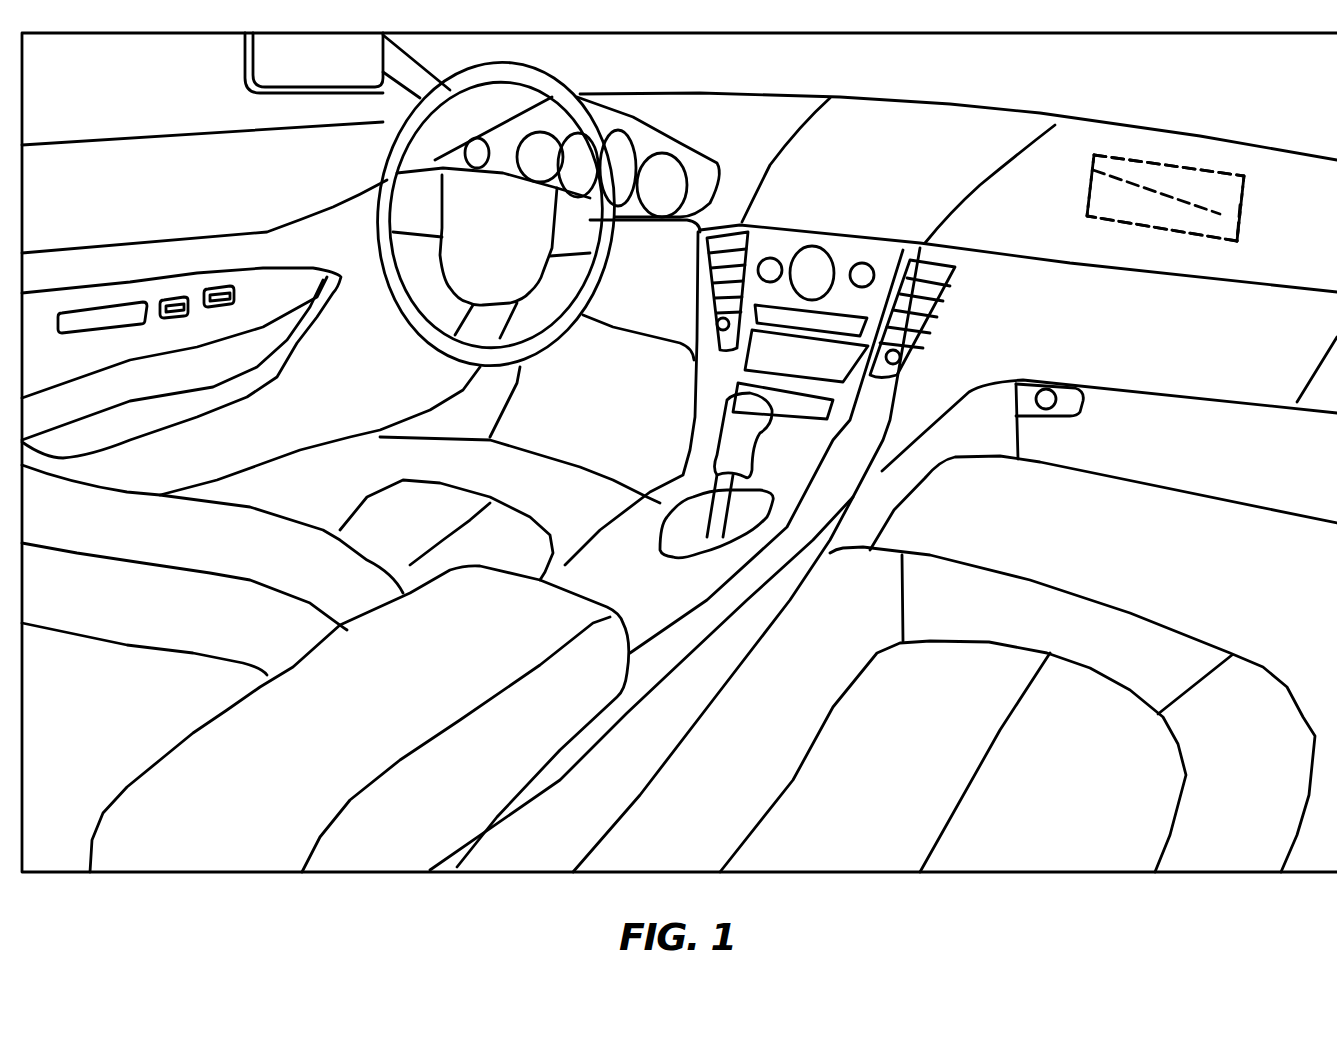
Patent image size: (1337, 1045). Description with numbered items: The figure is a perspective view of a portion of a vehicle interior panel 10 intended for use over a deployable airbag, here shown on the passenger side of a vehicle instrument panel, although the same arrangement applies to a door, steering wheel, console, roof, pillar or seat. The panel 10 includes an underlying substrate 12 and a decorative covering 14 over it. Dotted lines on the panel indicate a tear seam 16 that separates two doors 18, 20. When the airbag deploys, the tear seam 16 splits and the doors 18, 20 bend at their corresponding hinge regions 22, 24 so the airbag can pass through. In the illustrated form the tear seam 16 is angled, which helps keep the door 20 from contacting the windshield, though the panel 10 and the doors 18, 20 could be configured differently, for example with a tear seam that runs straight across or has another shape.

The vehicle interior panel 10 is at (1076, 130).
The substrate 12 is at (1158, 160).
The decorative covering 14 is at (1118, 160).
The tear seam 16 is at (1220, 212).
The door 18 is at (1208, 233).
The door 20 is at (1237, 205).
The hinge region 22 is at (1128, 227).
The hinge region 24 is at (1205, 168).